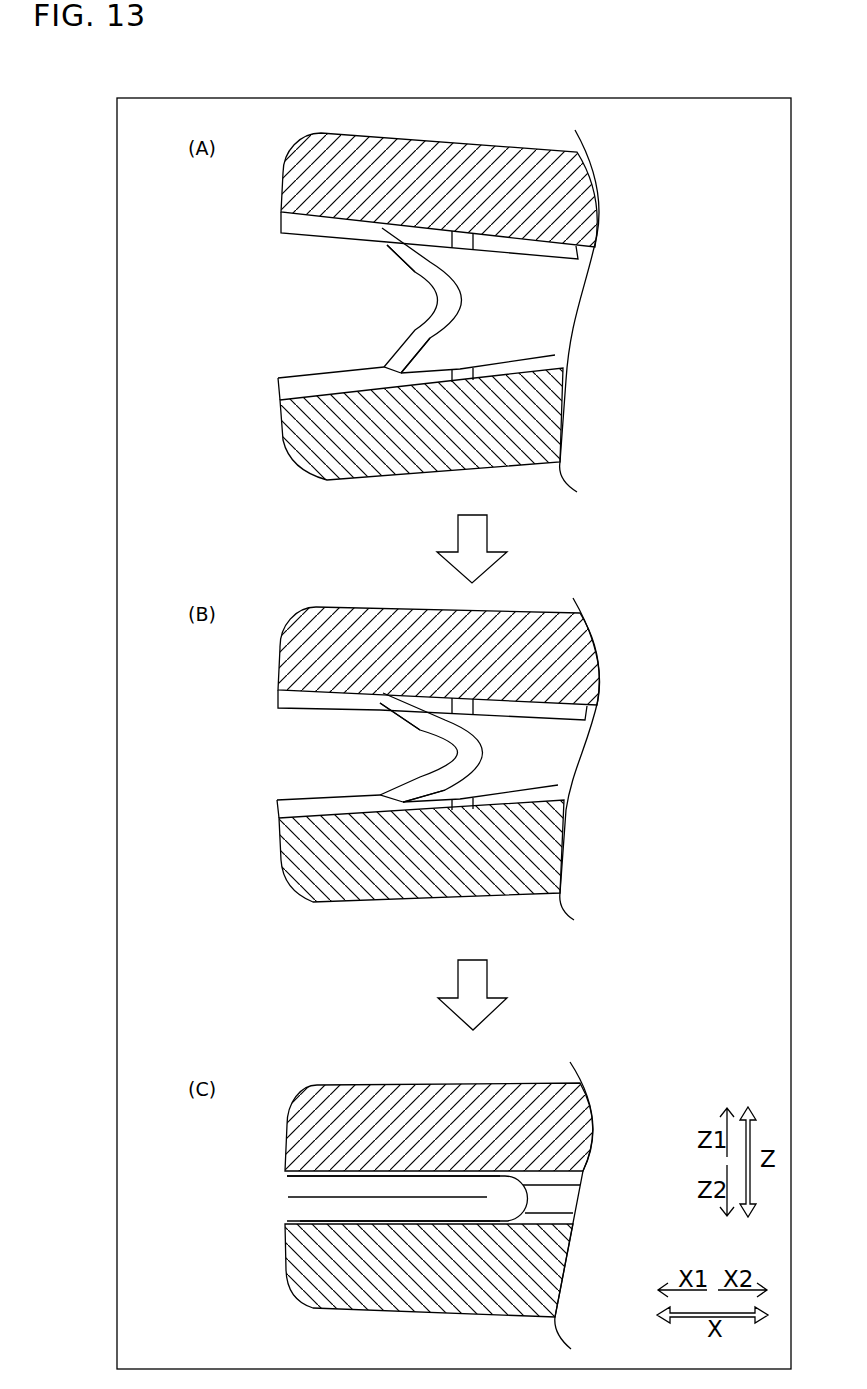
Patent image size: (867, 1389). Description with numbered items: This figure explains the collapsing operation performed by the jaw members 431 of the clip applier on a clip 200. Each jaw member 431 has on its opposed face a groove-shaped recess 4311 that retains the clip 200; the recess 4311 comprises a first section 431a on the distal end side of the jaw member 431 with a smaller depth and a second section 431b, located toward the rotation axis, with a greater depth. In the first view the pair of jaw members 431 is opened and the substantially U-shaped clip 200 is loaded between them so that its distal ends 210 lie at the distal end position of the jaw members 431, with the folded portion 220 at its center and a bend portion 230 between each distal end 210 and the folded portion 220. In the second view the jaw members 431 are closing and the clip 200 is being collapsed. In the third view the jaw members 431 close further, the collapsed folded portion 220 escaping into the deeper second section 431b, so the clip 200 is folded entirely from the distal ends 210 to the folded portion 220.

The jaw member 431 is at (515, 149).
The groove-shaped recess 4311 is at (573, 247).
The first section 431a is at (467, 252).
The second section 431b is at (544, 250).
The clip 200 is at (331, 236).
The distal end 210 is at (282, 213).
The folded portion 220 is at (455, 308).
The bend portion 230 is at (386, 250).